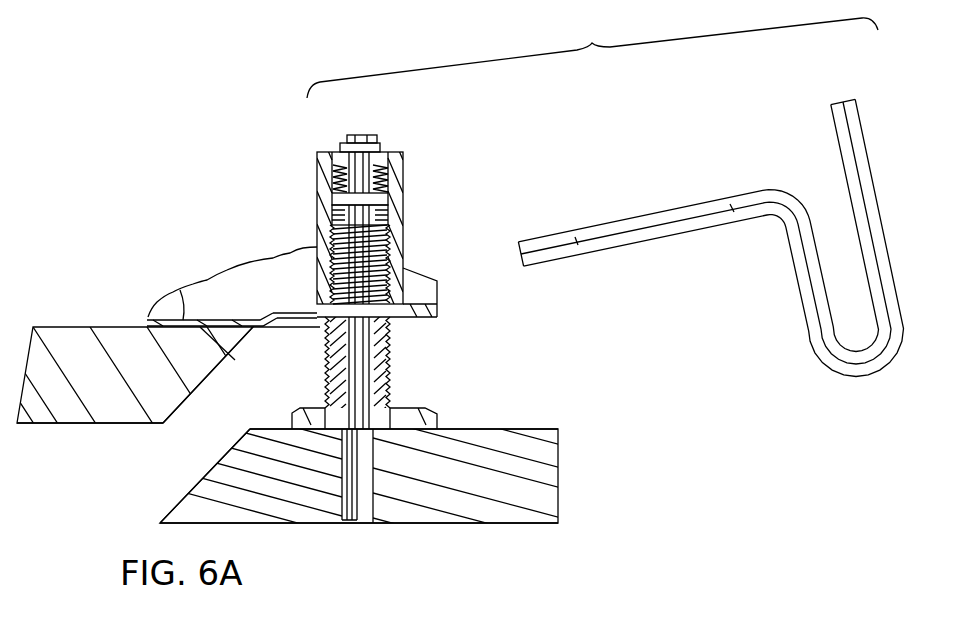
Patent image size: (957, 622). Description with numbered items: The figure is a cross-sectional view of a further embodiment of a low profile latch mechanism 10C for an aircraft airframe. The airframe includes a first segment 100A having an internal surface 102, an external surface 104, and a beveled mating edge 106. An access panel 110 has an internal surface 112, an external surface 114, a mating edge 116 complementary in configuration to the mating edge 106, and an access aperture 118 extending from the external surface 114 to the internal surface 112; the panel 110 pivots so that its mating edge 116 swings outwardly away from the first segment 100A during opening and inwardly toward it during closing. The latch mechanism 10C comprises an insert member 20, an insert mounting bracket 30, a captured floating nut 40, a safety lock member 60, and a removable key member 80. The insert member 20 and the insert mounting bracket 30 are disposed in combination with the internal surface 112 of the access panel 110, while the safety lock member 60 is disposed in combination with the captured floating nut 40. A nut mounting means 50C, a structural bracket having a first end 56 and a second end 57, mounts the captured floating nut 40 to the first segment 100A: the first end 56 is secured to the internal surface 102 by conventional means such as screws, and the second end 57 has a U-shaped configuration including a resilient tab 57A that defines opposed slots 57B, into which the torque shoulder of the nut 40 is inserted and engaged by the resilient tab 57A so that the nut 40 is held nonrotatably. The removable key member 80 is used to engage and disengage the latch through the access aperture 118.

The low profile latch mechanism 10C is at (592, 54).
The safety lock member 60 is at (389, 133).
The captured floating nut 40 is at (416, 206).
The resilient tab 57A is at (416, 278).
The second end 57 is at (437, 303).
The opposed slots 57B is at (317, 306).
The first end 56 is at (180, 290).
The nut mounting means 50C is at (273, 240).
The insert member 20 is at (400, 364).
The insert mounting bracket 30 is at (440, 408).
The access panel 110 is at (492, 510).
The internal surface 112 is at (508, 429).
The external surface 114 is at (448, 525).
The mating edge 116 is at (192, 488).
The access aperture 118 is at (350, 508).
The internal surface 102 is at (82, 325).
The external surface 104 is at (92, 424).
The mating edge 106 is at (207, 388).
The first segment 100A is at (216, 346).
The removable key member 80 is at (698, 250).